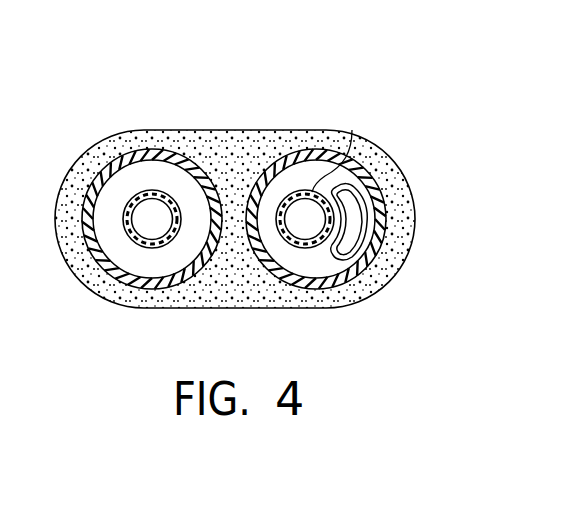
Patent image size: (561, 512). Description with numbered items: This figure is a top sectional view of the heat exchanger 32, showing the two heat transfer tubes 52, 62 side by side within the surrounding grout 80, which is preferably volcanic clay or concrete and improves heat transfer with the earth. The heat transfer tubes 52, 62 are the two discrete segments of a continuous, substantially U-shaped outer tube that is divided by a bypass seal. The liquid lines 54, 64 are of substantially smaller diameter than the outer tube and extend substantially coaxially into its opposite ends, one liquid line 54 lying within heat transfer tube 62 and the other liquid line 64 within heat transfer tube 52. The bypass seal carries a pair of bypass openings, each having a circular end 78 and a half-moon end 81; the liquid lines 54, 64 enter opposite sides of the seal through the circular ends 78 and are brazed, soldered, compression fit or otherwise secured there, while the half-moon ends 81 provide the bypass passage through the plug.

The heat exchanger 32 is at (362, 83).
The grout 80 is at (245, 130).
The liquid line 54 is at (151, 191).
The heat transfer tube 62 is at (193, 275).
The liquid line 64 is at (339, 148).
The heat transfer tube 52 is at (392, 222).
The half-moon end 81 is at (357, 254).
The circular end 78 is at (302, 247).